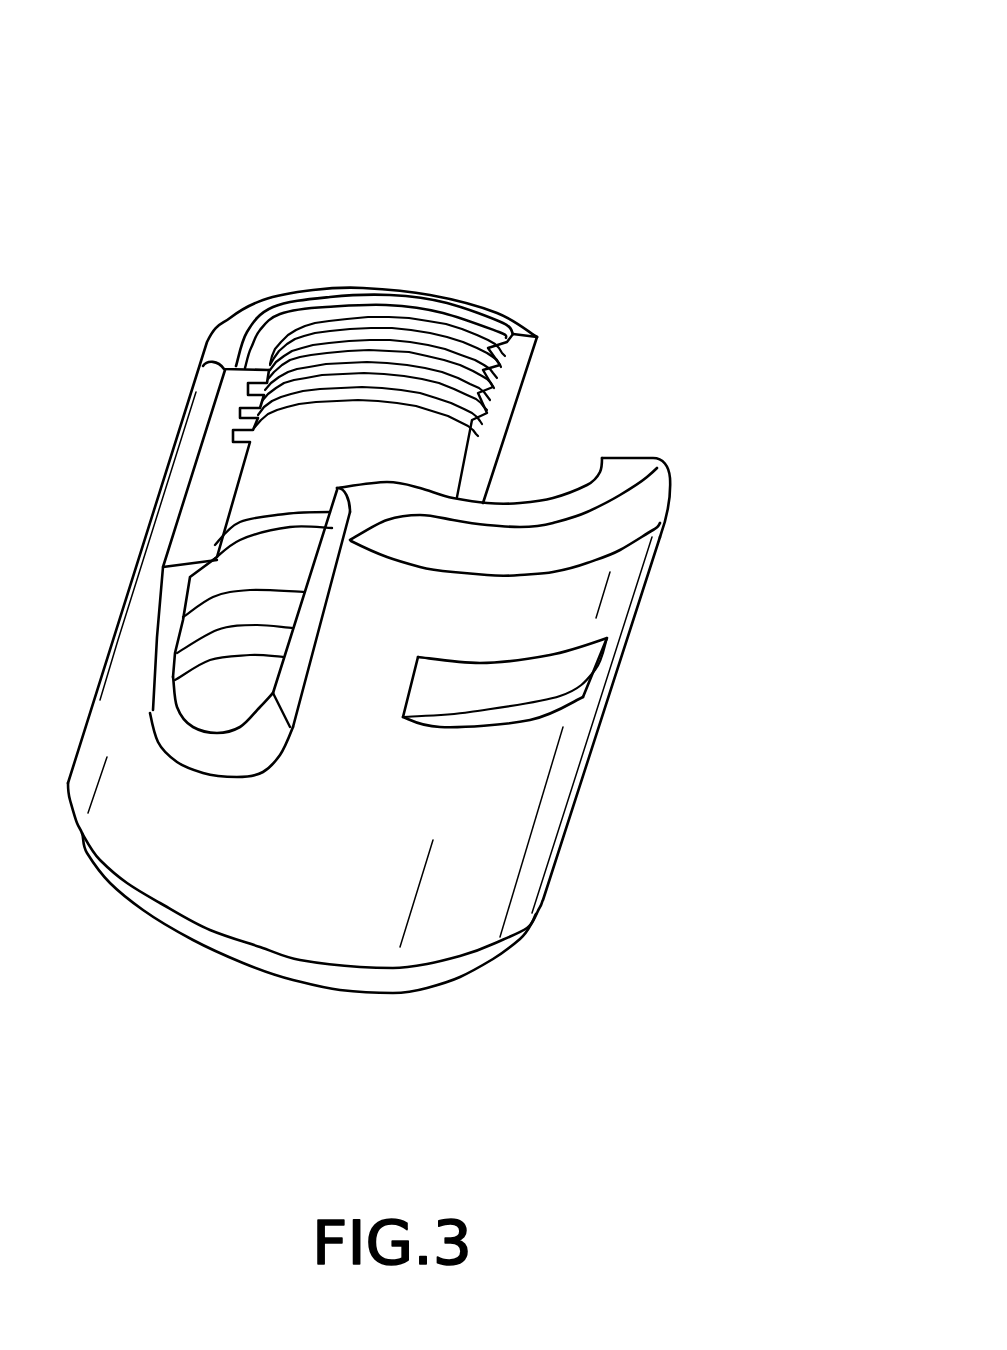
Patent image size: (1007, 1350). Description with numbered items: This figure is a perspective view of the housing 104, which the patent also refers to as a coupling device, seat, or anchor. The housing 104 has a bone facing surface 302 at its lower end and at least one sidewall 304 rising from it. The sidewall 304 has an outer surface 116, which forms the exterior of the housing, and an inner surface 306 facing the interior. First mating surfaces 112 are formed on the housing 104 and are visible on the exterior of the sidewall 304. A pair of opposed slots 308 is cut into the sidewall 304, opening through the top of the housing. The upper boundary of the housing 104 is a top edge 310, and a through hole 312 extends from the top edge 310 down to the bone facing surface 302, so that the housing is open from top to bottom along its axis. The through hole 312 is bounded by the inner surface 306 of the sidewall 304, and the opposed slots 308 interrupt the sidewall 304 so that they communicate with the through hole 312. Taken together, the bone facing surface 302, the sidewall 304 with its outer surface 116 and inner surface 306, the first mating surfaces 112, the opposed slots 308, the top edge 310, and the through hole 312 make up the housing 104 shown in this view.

The housing 104 is at (200, 158).
The first mating surfaces 112 is at (573, 682).
The outer surface 116 is at (518, 838).
The bone facing surface 302 is at (335, 993).
The sidewall 304 is at (643, 583).
The inner surface 306 is at (257, 468).
The opposed slots 308 is at (148, 360).
The top edge 310 is at (622, 473).
The through hole 312 is at (375, 348).